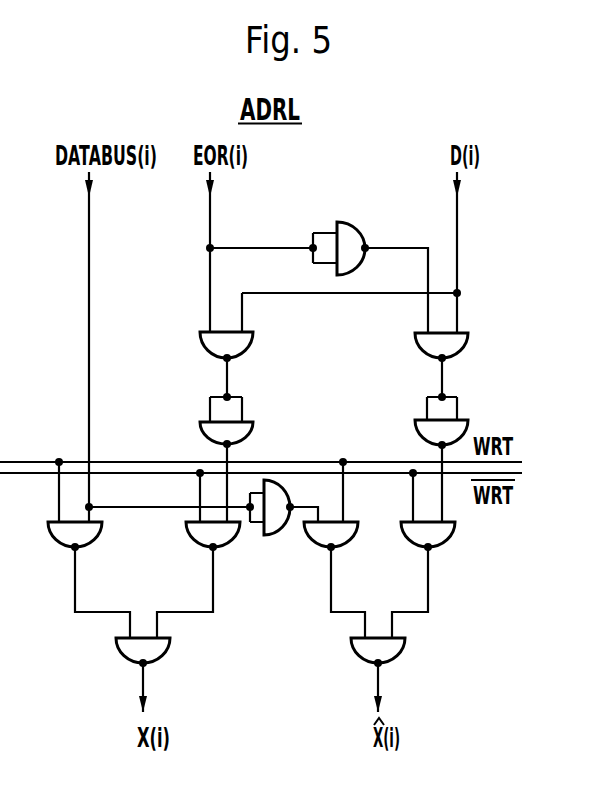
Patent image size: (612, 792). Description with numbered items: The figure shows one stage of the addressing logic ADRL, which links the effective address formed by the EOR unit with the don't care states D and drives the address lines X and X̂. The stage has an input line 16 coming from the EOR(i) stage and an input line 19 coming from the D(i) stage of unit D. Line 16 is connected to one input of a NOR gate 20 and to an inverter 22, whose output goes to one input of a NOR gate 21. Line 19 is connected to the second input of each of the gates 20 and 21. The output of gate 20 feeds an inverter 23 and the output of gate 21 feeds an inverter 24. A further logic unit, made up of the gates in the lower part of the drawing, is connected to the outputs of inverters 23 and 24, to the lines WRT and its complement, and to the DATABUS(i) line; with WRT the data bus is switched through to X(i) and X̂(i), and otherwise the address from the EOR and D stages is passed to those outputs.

The input line 16 is at (210, 214).
The input line 19 is at (457, 218).
The NOR gate 20 is at (245, 342).
The NOR gate 21 is at (415, 340).
The inverter 22 is at (352, 238).
The inverter 23 is at (240, 428).
The inverter 24 is at (423, 428).